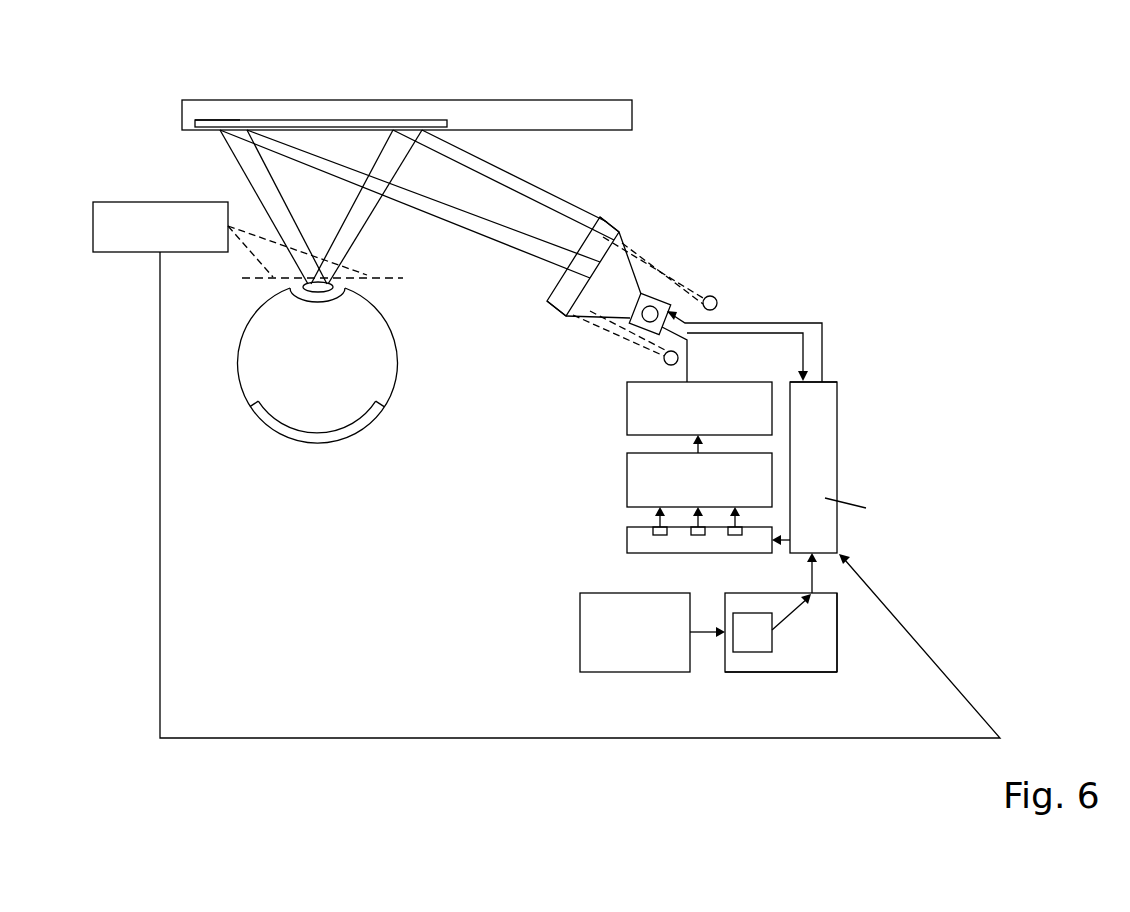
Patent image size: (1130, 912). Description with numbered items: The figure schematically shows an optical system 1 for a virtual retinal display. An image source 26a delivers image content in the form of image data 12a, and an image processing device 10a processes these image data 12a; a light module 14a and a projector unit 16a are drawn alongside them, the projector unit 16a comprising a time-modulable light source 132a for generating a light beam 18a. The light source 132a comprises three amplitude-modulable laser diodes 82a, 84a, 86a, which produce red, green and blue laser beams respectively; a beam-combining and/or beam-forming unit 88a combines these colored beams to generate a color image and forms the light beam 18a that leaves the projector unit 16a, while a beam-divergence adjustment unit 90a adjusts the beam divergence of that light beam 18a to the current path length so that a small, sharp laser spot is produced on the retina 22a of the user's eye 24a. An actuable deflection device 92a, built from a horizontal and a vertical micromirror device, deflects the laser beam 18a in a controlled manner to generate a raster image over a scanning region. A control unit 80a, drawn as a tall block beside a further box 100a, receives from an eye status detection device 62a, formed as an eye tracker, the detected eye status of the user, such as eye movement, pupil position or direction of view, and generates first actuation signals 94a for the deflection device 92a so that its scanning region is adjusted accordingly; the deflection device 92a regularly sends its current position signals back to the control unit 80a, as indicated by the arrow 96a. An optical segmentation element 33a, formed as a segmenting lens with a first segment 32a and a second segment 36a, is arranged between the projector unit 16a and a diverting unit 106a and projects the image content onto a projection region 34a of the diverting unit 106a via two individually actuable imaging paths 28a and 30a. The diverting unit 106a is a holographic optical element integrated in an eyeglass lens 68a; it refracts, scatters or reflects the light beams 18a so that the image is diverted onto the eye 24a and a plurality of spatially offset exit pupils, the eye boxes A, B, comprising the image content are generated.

The optical system 1 is at (1006, 337).
The image processing device 10a is at (803, 672).
The image data 12a is at (752, 652).
The light source unit 14a is at (821, 654).
The projector unit 16a is at (848, 452).
The light beam 18a is at (644, 292).
The retina 22a is at (315, 443).
The eye 24a is at (397, 362).
The image source 26a is at (635, 672).
The first imaging path 28a is at (545, 252).
The second imaging path 30a is at (525, 192).
The first segment 32a is at (616, 222).
The optical segmentation element 33a is at (615, 206).
The projection region 34a is at (317, 122).
The second segment 36a is at (554, 312).
The eye status detection device 62a is at (79, 189).
The eyeglass lens 68a is at (404, 85).
The control unit 80a is at (838, 467).
The first laser diode 82a is at (658, 537).
The second laser diode 84a is at (698, 537).
The third laser diode 86a is at (736, 537).
The beam-combining and/or beam-forming unit 88a is at (627, 480).
The beam-divergence adjustment unit 90a is at (627, 407).
The actuable deflection device 92a is at (716, 298).
The first actuation signals 94a is at (822, 350).
The position signal arrow 96a is at (801, 352).
The light module 100a is at (837, 632).
The diverting unit 106a is at (215, 122).
The light source 132a is at (627, 540).
The eye box A is at (310, 266).
The eye box B is at (337, 263).